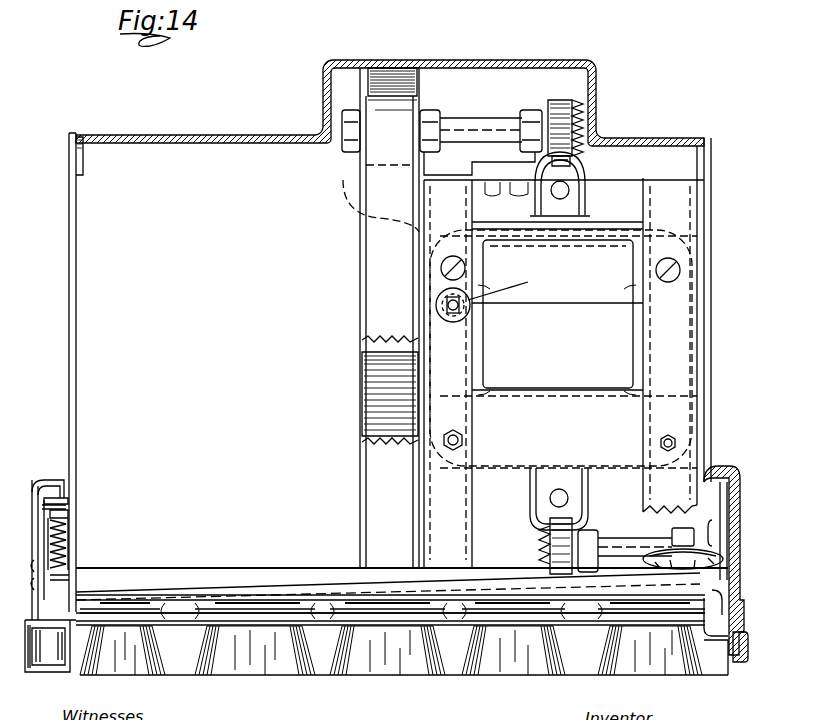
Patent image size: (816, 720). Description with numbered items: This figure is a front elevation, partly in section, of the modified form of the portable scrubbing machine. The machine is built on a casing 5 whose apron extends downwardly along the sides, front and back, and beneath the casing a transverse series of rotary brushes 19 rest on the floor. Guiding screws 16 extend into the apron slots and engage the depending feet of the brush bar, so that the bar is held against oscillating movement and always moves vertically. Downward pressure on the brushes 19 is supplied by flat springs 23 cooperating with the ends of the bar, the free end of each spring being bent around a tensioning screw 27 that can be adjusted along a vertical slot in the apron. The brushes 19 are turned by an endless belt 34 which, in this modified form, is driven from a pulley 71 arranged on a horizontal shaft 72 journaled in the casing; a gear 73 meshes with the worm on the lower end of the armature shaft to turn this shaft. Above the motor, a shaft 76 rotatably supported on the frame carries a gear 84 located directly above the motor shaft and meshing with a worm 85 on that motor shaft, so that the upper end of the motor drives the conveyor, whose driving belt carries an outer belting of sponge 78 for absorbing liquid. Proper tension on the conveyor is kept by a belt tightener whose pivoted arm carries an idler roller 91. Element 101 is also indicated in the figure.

The casing 5 is at (38, 546).
The guiding screws 16 is at (735, 612).
The rotary brush 19 is at (128, 667).
The flat springs 23 is at (66, 546).
The tensioning screw 27 is at (42, 486).
The endless belt 34 is at (190, 600).
The pulley 71 is at (730, 490).
The horizontal shaft 72 is at (618, 538).
The gear 73 is at (540, 548).
The shaft 76 is at (492, 117).
The belting of sponge 78 is at (384, 88).
The gear 84 is at (581, 119).
The worm 85 is at (579, 143).
The idler roller 91 is at (372, 411).
The base flange 101 is at (702, 652).